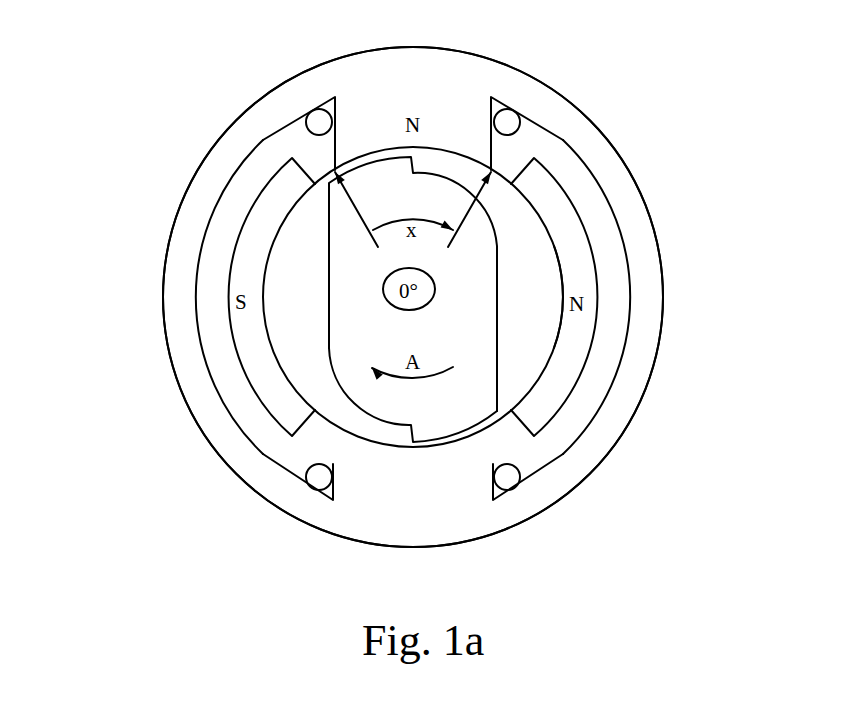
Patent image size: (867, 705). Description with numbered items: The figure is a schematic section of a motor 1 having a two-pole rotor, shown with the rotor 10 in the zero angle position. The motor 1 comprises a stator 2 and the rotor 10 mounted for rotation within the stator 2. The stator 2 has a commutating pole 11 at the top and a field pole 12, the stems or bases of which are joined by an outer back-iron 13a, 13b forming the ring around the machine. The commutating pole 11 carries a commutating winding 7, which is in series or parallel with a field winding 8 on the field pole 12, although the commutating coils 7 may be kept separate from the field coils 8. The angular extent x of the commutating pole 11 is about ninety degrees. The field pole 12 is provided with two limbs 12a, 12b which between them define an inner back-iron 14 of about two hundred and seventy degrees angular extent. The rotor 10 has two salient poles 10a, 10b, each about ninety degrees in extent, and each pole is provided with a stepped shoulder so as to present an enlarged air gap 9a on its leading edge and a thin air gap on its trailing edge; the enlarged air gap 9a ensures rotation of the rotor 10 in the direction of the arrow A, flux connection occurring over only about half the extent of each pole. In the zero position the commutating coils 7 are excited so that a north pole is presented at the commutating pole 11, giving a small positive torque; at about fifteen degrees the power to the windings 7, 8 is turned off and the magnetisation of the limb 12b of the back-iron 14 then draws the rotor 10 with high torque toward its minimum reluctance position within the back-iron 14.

The motor 1 is at (156, 166).
The stator 2 is at (432, 297).
The commutating winding 7 is at (461, 113).
The field winding 8 is at (457, 490).
The enlarged air gap 9a is at (413, 308).
The rotor 10 is at (520, 284).
The salient pole 10a is at (413, 209).
The salient pole 10b is at (413, 395).
The commutating pole 11 is at (413, 94).
The field pole 12 is at (413, 370).
The limb of field pole 12a is at (200, 297).
The limb of field pole 12b is at (620, 297).
The outer back-iron 13a is at (195, 297).
The outer back-iron 13b is at (636, 297).
The inner back-iron 14 is at (510, 297).